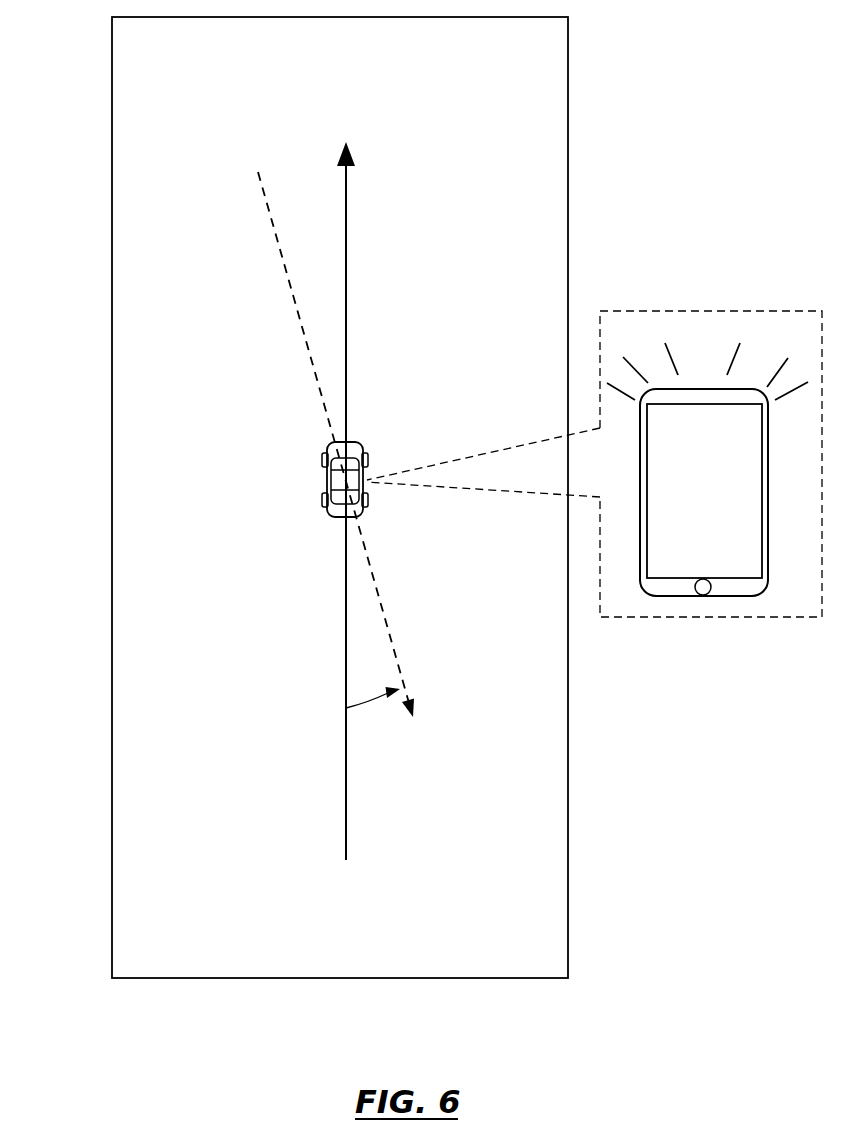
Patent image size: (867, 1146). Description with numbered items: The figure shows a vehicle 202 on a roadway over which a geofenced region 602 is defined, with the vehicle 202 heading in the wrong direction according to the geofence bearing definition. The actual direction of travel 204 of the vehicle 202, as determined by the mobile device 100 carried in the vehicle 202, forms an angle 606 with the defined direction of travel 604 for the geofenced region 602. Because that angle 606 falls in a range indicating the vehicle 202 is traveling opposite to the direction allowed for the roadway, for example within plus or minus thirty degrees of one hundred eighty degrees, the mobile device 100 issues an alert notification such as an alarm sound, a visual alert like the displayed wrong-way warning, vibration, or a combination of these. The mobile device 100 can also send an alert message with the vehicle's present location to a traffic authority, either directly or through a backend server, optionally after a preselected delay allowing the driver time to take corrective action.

The mobile device 100 is at (723, 596).
The vehicle 202 is at (322, 477).
The actual direction of travel 204 is at (346, 277).
The geofenced region 602 is at (112, 659).
The defined direction of travel 604 is at (290, 283).
The angle 606 is at (379, 706).